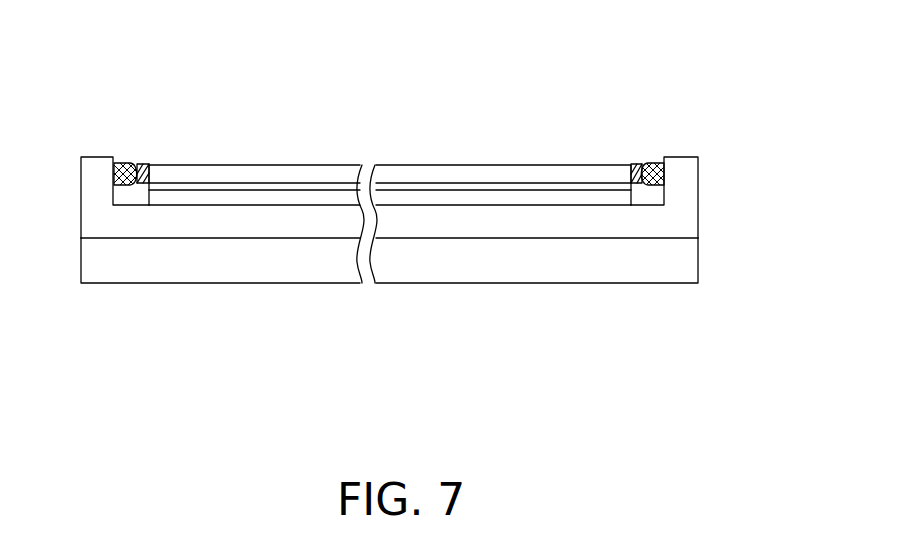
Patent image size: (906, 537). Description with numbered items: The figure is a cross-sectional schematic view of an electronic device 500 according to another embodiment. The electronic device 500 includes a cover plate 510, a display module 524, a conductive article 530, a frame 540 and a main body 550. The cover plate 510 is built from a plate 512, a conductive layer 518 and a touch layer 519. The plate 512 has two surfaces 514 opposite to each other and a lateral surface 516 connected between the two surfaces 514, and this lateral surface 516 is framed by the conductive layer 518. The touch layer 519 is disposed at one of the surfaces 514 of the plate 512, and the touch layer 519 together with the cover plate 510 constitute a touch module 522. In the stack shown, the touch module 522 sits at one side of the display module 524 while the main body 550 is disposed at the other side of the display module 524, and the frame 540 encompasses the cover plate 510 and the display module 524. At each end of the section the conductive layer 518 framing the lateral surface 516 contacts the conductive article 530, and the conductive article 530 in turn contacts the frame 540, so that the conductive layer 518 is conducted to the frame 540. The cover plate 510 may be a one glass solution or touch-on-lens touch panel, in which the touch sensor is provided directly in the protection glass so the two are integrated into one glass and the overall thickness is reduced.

The electronic device 500 is at (102, 122).
The cover plate 510 is at (628, 89).
The plate 512 is at (450, 175).
The surfaces 514 is at (525, 183).
The lateral surface 516 is at (632, 176).
The conductive layer 518 is at (635, 165).
The touch layer 519 is at (396, 187).
The touch module 522 is at (431, 134).
The display module 524 is at (623, 200).
The conductive article 530 is at (648, 162).
The frame 540 is at (699, 183).
The main body 550 is at (688, 258).